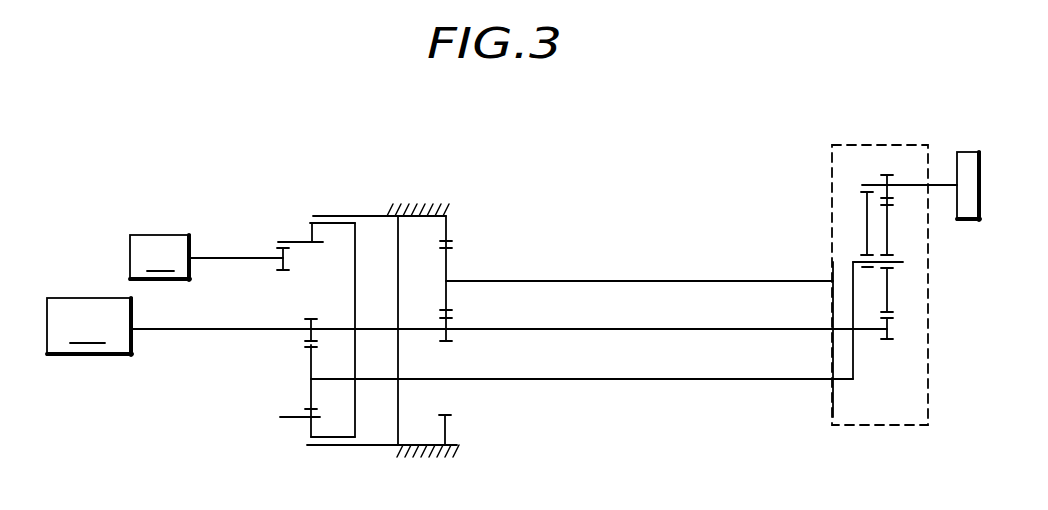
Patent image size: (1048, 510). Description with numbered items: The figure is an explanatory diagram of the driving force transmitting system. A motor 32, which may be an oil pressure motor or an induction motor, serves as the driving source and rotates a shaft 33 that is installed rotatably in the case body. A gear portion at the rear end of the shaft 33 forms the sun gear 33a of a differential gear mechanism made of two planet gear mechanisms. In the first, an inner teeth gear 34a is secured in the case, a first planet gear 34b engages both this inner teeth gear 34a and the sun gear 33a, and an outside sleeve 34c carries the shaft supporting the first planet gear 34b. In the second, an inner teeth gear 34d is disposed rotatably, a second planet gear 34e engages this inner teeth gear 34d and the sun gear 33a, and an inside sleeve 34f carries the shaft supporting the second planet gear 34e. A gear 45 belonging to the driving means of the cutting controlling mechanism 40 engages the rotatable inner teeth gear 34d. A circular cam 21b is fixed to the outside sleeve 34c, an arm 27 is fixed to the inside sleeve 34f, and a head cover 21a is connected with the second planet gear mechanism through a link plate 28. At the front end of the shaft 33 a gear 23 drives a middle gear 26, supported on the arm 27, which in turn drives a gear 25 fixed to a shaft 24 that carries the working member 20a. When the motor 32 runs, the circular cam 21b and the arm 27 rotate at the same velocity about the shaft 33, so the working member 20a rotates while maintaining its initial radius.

The working member 20a is at (966, 152).
The head cover 21a is at (930, 355).
The circular cam 21b is at (830, 402).
The gear 23 is at (893, 326).
The shaft 24 is at (903, 187).
The gear 25 is at (890, 175).
The middle gear 26 is at (893, 287).
The arm 27 is at (878, 338).
The link plate 28 is at (865, 218).
The motor 32 is at (89, 326).
The shaft 33 is at (633, 331).
The sun gear 33a is at (310, 322).
The inner teeth gear 34a is at (449, 222).
The first planet gear 34b is at (448, 265).
The outside sleeve 34c is at (650, 280).
The inner teeth gear 34d is at (300, 241).
The second planet gear 34e is at (310, 362).
The inside sleeve 34f is at (650, 380).
The cutting controlling mechanism 40 is at (206, 257).
The gear 45 is at (290, 264).